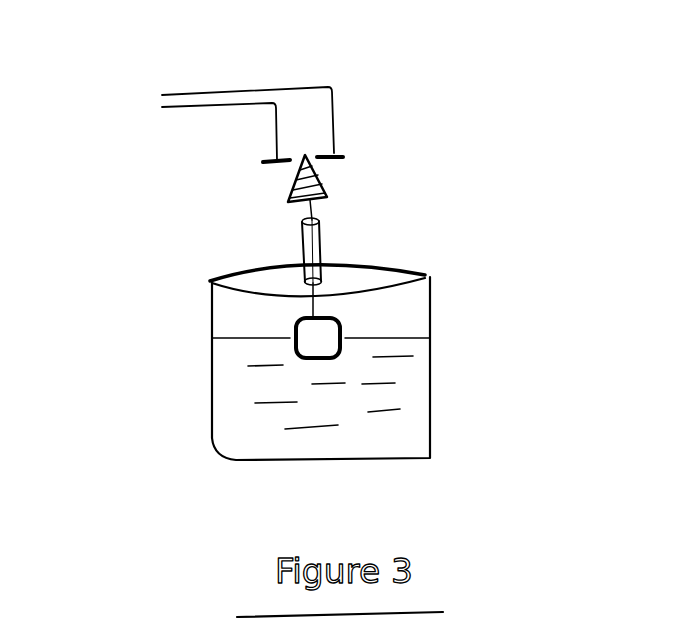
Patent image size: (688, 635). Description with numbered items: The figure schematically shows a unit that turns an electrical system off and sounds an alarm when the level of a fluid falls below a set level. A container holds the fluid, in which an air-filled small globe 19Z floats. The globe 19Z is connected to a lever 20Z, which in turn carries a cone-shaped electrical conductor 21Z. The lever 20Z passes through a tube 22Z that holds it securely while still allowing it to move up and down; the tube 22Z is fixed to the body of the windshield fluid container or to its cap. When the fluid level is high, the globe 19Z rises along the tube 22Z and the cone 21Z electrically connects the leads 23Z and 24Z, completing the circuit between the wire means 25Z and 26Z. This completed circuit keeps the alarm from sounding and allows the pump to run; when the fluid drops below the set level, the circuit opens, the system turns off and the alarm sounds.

The air-filled small globe 19Z is at (340, 320).
The lever 20Z is at (315, 207).
The cone-shaped electrical conductor 21Z is at (320, 180).
The tube 22Z is at (302, 242).
The lead 23Z is at (345, 153).
The lead 24Z is at (264, 158).
The wire means 25Z is at (177, 95).
The wire means 26Z is at (178, 107).